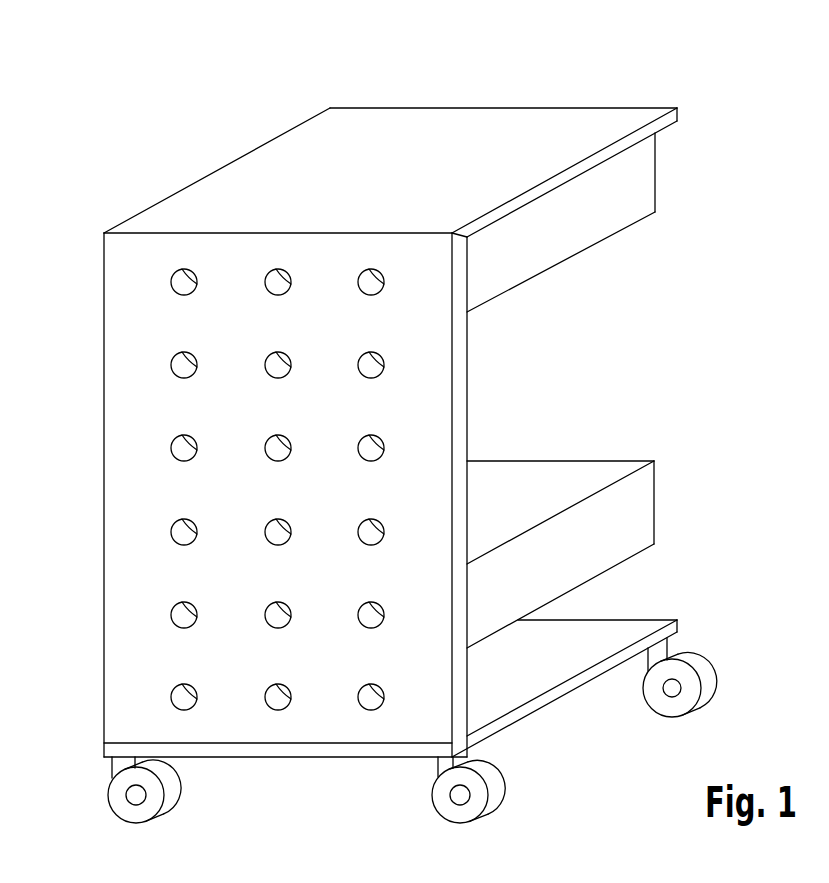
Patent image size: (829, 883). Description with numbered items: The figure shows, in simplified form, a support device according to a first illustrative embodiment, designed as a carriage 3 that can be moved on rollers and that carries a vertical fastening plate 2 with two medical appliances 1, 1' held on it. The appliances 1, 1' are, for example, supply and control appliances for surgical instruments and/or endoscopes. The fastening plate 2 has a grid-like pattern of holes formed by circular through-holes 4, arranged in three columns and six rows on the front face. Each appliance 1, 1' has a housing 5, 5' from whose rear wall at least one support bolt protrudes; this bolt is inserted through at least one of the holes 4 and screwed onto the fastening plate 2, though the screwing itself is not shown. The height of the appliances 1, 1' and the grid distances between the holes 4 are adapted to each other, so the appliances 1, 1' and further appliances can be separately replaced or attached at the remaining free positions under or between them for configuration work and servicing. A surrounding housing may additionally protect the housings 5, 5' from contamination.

The appliance 1 is at (613, 172).
The appliance 1' is at (435, 609).
The fastening plate 2 is at (130, 292).
The carriage 3 is at (588, 85).
The through-holes 4 is at (182, 365).
The housing 5 is at (561, 225).
The housing 5' is at (560, 518).